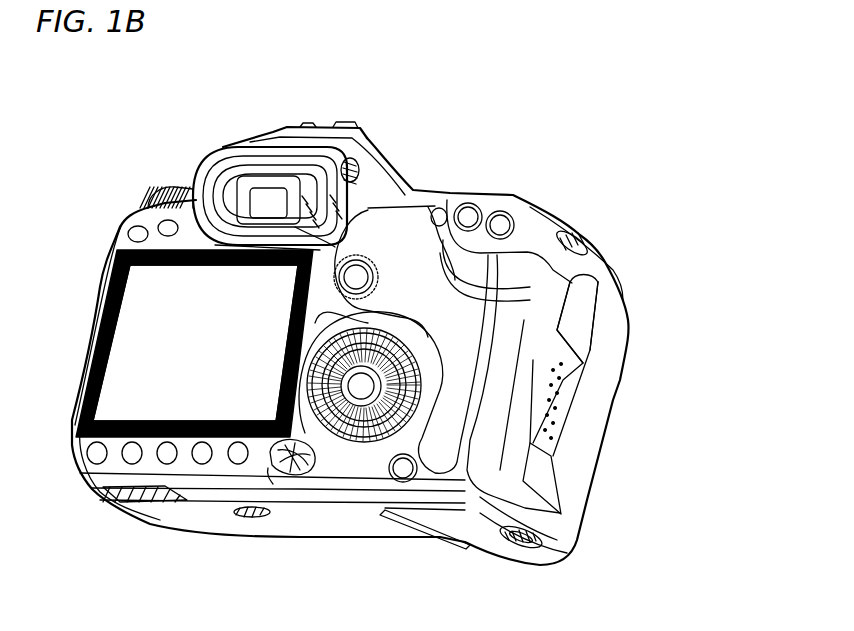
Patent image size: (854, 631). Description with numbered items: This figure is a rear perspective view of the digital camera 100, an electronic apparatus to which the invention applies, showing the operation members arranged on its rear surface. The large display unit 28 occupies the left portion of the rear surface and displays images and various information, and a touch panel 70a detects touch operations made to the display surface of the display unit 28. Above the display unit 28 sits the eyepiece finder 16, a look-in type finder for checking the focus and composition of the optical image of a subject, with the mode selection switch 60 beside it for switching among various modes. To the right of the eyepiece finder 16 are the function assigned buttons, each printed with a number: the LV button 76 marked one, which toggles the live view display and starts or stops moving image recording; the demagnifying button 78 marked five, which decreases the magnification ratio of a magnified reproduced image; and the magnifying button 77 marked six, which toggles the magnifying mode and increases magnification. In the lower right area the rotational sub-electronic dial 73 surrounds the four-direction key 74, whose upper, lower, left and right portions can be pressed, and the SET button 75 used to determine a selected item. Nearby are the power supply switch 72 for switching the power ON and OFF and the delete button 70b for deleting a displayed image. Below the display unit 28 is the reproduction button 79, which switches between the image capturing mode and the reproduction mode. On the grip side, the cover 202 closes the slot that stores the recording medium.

The digital camera 100 is at (575, 180).
The mode selection switch 60 is at (168, 187).
The eyepiece finder 16 is at (267, 213).
The display unit 28 is at (181, 307).
The touch panel 70a is at (133, 345).
The LV button 76 is at (358, 257).
The demagnifying button 78 is at (473, 206).
The magnifying button 77 is at (505, 212).
The cover 202 is at (530, 383).
The reproduction button 79 is at (240, 464).
The power supply switch 72 is at (294, 474).
The sub-electronic dial 73 is at (355, 447).
The four-direction key 74 is at (358, 415).
The SET button 75 is at (362, 392).
The delete button 70b is at (412, 480).